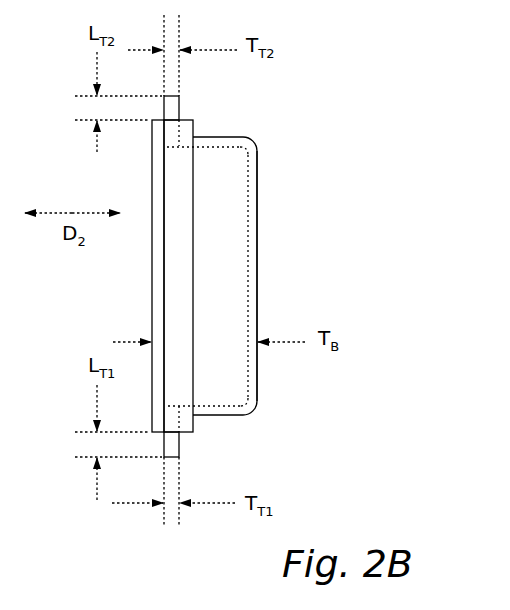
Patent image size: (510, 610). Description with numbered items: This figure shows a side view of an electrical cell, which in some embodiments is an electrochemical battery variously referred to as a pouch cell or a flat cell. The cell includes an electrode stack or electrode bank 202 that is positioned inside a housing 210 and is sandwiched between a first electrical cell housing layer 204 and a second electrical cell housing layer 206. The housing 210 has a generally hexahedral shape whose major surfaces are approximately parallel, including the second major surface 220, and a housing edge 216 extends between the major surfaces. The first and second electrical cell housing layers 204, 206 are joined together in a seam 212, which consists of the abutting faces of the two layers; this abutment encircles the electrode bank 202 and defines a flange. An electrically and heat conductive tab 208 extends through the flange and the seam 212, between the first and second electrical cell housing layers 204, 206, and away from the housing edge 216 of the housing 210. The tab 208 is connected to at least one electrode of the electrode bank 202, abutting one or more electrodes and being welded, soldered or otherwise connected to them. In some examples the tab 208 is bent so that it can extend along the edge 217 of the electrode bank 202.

The electrode bank 202 is at (250, 305).
The first electrical cell housing layer 204 is at (151, 275).
The second electrical cell housing layer 206 is at (259, 276).
The tab 208 is at (182, 450).
The housing 210 is at (258, 229).
The seam 212 is at (162, 187).
The housing edge 216 is at (196, 445).
The edge of the electrode bank 217 is at (219, 406).
The second major surface 220 is at (151, 245).